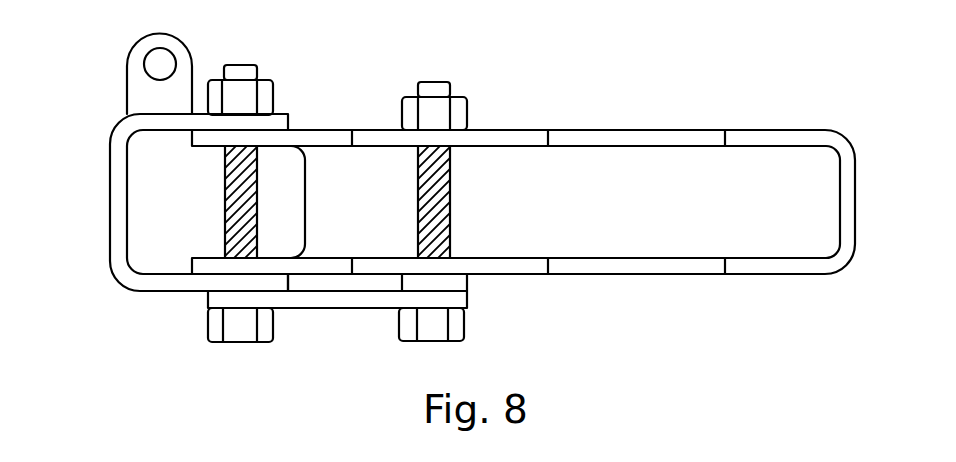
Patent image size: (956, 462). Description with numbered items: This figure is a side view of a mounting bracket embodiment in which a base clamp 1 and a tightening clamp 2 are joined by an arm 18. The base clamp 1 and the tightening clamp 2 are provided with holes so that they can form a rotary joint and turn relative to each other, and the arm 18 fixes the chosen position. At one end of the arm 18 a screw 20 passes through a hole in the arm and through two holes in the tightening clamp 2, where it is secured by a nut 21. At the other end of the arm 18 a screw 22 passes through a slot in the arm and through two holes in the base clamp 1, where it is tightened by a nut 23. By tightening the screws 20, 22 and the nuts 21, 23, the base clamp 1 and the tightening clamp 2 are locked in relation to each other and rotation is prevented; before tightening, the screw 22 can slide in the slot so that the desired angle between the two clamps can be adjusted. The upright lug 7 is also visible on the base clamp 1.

The base clamp 1 is at (110, 193).
The tightening clamp 2 is at (675, 129).
The mounting tab with hole 7 is at (182, 74).
The arm 18 is at (339, 302).
The screw 20 is at (435, 90).
The nut 21 is at (458, 110).
The screw 22 is at (240, 73).
The nut 23 is at (267, 93).